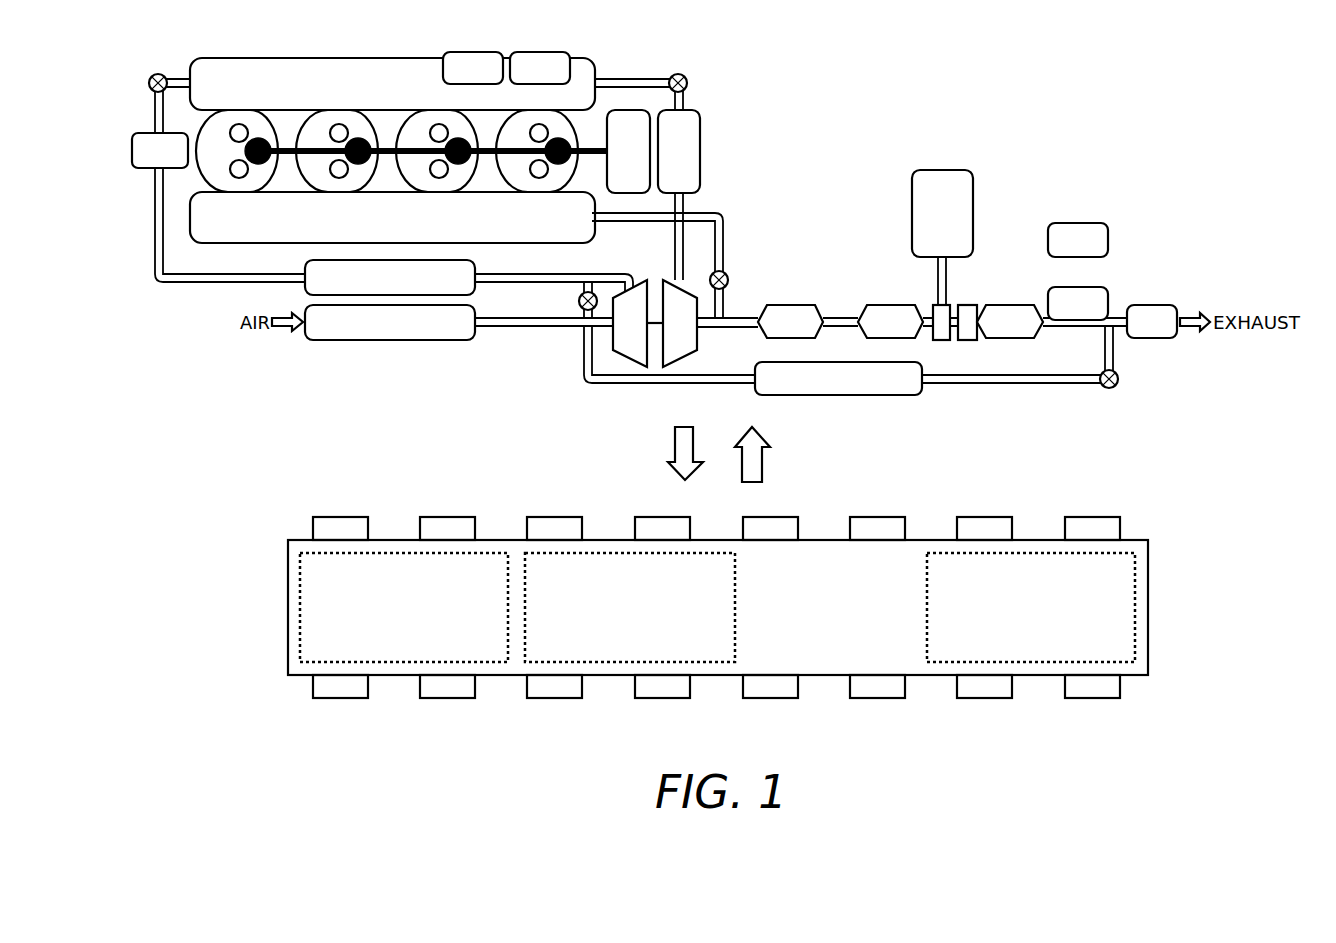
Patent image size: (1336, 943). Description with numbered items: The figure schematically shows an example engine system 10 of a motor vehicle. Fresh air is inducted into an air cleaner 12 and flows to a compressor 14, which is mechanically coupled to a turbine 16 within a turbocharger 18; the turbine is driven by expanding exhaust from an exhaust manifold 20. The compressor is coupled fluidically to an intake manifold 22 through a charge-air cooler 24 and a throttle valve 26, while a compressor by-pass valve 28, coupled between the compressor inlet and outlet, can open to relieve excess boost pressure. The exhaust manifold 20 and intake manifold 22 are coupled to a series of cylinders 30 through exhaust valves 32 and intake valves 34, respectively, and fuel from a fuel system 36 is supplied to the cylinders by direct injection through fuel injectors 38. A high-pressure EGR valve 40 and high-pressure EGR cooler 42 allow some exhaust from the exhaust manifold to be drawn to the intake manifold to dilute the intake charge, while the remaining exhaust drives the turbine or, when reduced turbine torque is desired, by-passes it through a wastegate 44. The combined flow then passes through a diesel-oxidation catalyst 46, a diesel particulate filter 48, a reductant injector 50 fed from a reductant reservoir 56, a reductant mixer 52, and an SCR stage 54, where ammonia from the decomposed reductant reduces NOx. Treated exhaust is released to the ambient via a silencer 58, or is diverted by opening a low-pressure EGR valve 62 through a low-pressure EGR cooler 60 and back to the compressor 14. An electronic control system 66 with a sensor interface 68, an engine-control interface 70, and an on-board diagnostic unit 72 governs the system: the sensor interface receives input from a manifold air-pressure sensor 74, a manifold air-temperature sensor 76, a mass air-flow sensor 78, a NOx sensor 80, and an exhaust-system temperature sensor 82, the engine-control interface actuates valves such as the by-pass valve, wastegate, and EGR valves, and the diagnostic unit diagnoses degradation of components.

The engine system 10 is at (785, 46).
The air cleaner 12 is at (400, 332).
The compressor 14 is at (640, 333).
The turbine 16 is at (689, 333).
The turbocharger 18 is at (654, 306).
The exhaust manifold 20 is at (439, 227).
The intake manifold 22 is at (435, 95).
The charge-air cooler 24 is at (421, 287).
The throttle valve 26 is at (157, 73).
The compressor by-pass valve 28 is at (578, 302).
The cylinders 30 is at (195, 179).
The exhaust valves 32 is at (239, 178).
The intake valves 34 is at (238, 124).
The fuel system 36 is at (640, 161).
The fuel injectors 38 is at (467, 159).
The high-pressure EGR valve 40 is at (677, 74).
The high-pressure EGR cooler 42 is at (690, 161).
The wastegate 44 is at (752, 259).
The diesel-oxidation catalyst 46 is at (790, 305).
The diesel particulate filter 48 is at (892, 305).
The reductant injector 50 is at (943, 340).
The reductant mixer 52 is at (967, 305).
The SCR stage 54 is at (1013, 305).
The reductant reservoir 56 is at (951, 238).
The silencer 58 is at (1163, 332).
The low-pressure EGR cooler 60 is at (850, 388).
The low-pressure EGR valve 62 is at (1113, 387).
The electronic control system 66 is at (882, 643).
The sensor interface 68 is at (415, 632).
The engine-control interface 70 is at (1097, 632).
The on-board diagnostic unit 72 is at (685, 618).
The manifold air-pressure sensor 74 is at (477, 50).
The manifold air-temperature sensor 76 is at (538, 50).
The mass air-flow sensor 78 is at (131, 163).
The NOx sensor 80 is at (1110, 276).
The exhaust-system temperature sensor 82 is at (1110, 210).